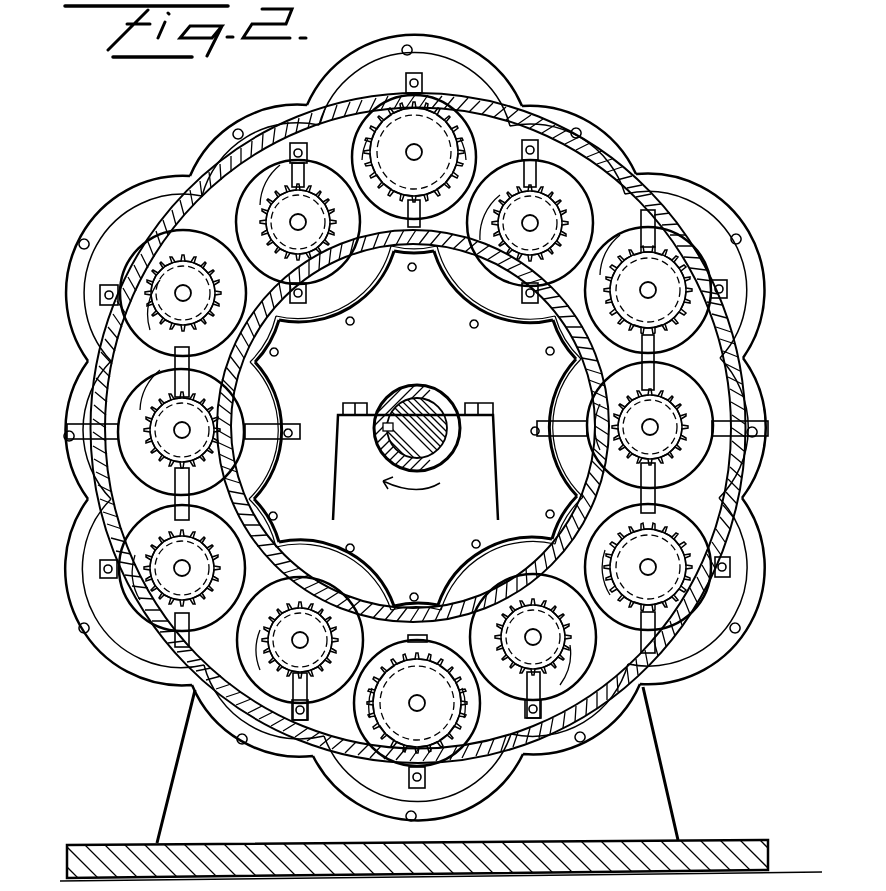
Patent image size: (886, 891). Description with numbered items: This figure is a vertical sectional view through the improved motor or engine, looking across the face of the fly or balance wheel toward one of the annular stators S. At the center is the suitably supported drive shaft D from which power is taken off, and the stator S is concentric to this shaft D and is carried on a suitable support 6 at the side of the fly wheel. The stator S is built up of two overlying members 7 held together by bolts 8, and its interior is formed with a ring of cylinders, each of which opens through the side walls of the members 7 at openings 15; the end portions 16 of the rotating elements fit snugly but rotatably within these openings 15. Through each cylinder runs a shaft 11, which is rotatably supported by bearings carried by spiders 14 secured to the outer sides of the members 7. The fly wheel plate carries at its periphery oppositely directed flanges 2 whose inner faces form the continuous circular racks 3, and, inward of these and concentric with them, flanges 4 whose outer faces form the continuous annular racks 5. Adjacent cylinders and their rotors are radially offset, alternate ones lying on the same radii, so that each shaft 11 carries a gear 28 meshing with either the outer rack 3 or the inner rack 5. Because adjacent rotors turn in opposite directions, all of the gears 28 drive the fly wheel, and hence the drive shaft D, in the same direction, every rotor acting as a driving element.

The flanges 2 is at (286, 125).
The continuous circular racks 3 is at (215, 213).
The flanges 4 is at (426, 270).
The continuous annular racks 5 is at (222, 396).
The support 6 is at (652, 787).
The overlying members 7 is at (702, 200).
The bolts 8 is at (603, 138).
The shaft 11 is at (616, 662).
The spiders 14 is at (117, 661).
The openings 15 is at (353, 155).
The end portions 16 is at (270, 774).
The gear 28 is at (160, 450).
The drive shaft D is at (427, 402).
The annular stator S is at (127, 687).